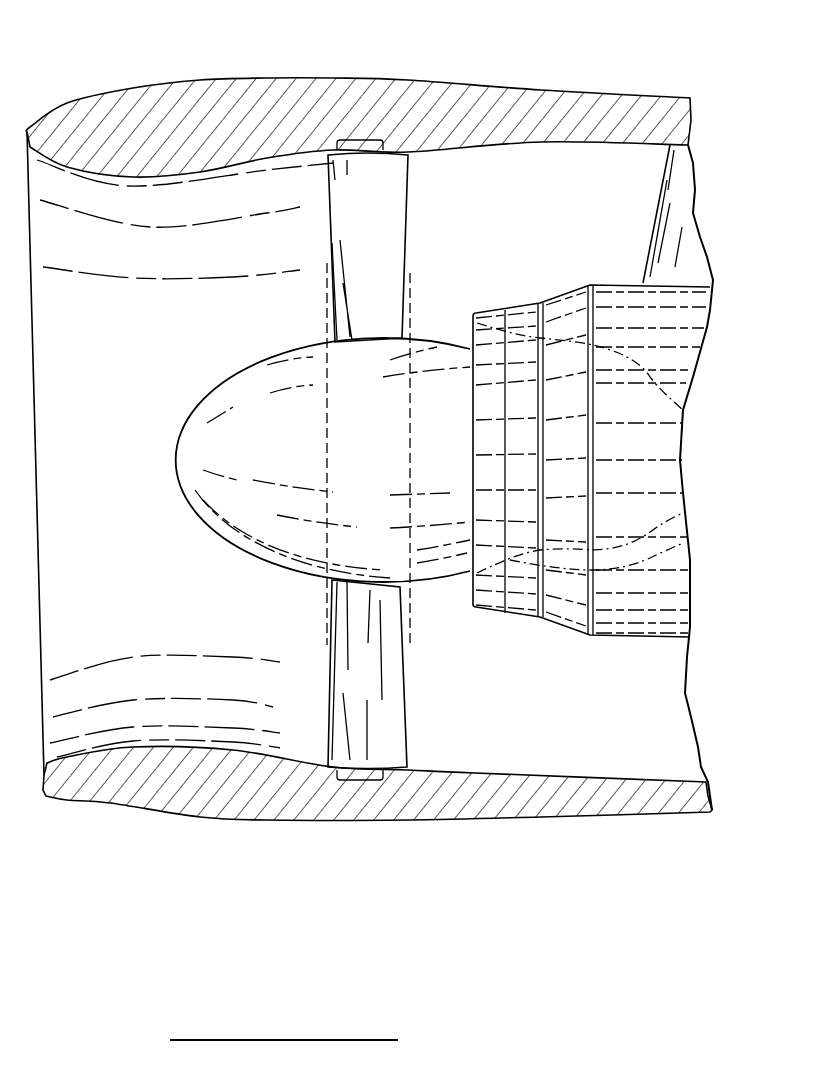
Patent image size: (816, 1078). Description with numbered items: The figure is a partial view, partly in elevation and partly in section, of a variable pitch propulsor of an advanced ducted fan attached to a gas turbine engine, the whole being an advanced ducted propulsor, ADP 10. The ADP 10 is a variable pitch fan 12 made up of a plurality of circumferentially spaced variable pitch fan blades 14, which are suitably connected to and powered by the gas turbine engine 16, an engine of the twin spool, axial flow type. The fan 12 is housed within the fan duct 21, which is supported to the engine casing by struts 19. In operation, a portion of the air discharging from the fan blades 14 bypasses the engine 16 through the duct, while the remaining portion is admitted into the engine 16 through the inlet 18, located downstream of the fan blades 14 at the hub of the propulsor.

The advanced ducted propulsor (ADP) 10 is at (445, 70).
The variable pitch fan 12 is at (225, 380).
The variable pitch fan blades 14 is at (397, 255).
The gas turbine engine 16 is at (717, 294).
The inlet 18 is at (470, 330).
The struts 19 is at (695, 180).
The fan duct 21 is at (273, 75).